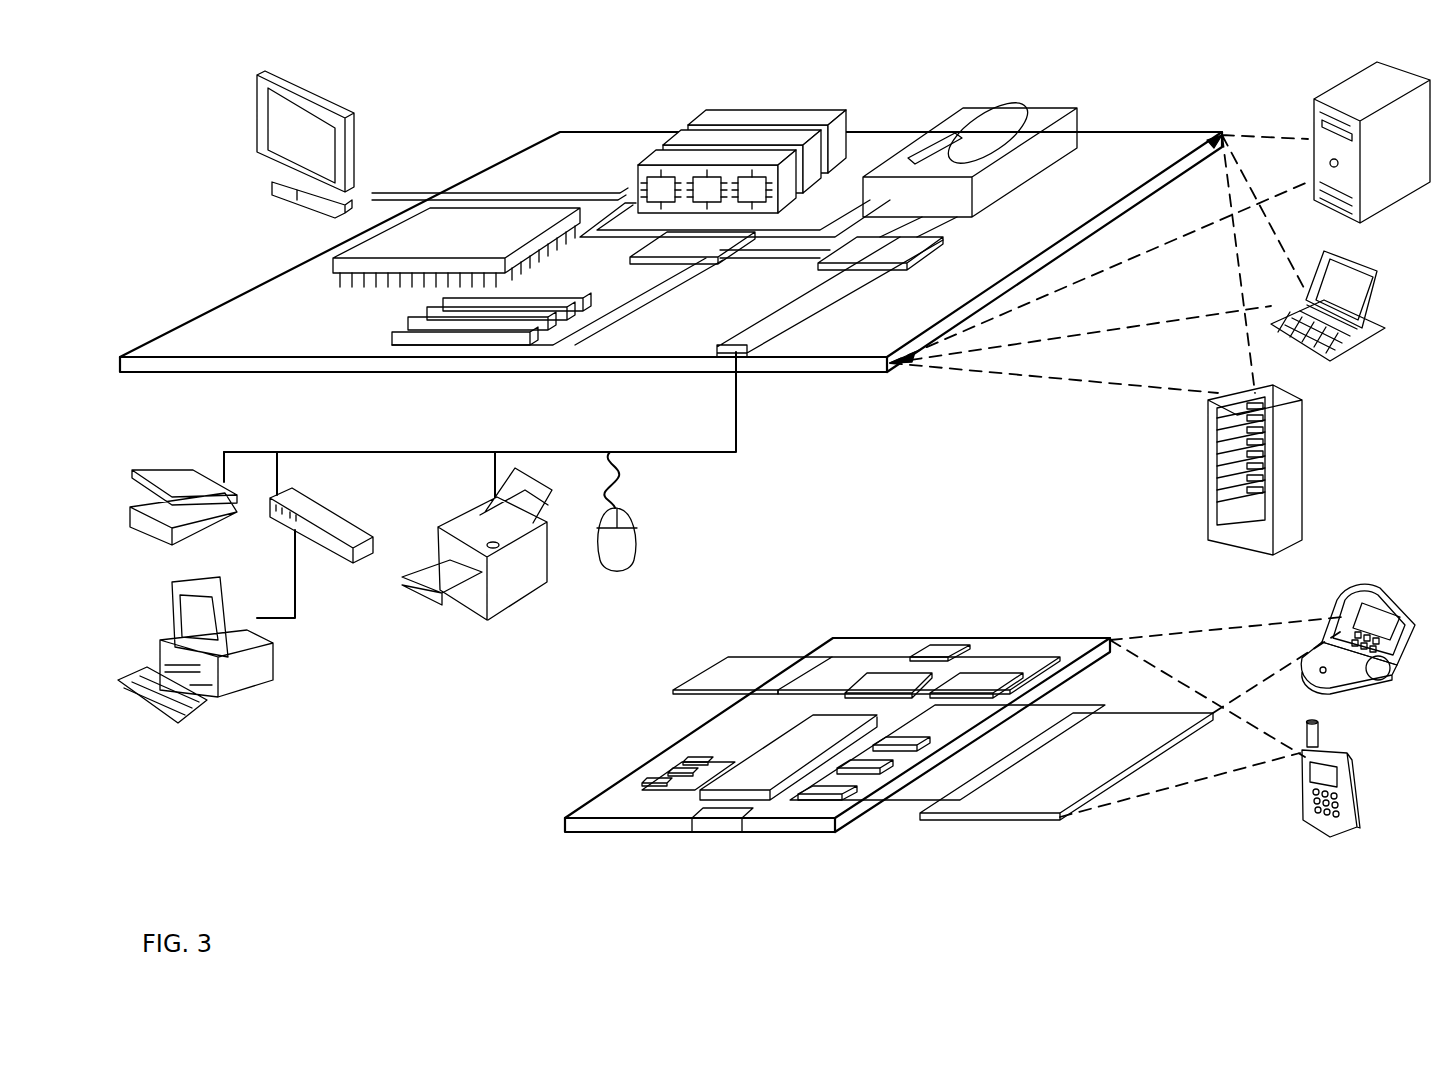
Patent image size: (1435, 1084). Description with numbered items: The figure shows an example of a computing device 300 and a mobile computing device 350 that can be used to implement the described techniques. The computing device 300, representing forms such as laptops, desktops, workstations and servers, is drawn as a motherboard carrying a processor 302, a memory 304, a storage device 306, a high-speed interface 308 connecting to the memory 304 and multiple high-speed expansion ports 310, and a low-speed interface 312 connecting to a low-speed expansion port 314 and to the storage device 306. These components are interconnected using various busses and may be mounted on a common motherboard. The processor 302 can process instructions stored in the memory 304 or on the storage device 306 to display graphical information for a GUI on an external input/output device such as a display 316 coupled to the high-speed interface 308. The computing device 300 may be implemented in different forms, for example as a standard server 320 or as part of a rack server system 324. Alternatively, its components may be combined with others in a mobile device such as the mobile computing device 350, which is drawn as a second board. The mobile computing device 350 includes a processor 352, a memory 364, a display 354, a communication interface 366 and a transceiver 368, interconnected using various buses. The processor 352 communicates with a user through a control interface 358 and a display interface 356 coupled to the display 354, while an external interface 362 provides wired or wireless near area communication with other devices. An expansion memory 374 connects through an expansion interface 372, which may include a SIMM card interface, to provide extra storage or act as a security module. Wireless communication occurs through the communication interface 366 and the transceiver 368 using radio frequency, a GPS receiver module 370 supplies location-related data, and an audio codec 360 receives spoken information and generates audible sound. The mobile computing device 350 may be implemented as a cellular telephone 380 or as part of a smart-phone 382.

The computing device 300 is at (478, 102).
The processor 302 is at (333, 264).
The memory 304 is at (712, 128).
The storage device 306 is at (960, 118).
The high-speed interface 308 is at (668, 246).
The high-speed expansion ports 310 is at (410, 324).
The low-speed interface 312 is at (857, 248).
The low-speed expansion port 314 is at (748, 362).
The display 316 is at (262, 77).
The standard server 320 is at (1312, 124).
The rack server system 324 is at (1210, 502).
The mobile computing device 350 is at (543, 826).
The processor 352 is at (759, 782).
The display 354 is at (1022, 803).
The display interface 356 is at (833, 795).
The control interface 358 is at (888, 762).
The audio codec 360 is at (898, 746).
The external interface 362 is at (720, 818).
The memory 364 is at (673, 772).
The communication interface 366 is at (893, 676).
The transceiver 368 is at (977, 682).
The GPS receiver module 370 is at (945, 645).
The expansion interface 372 is at (813, 652).
The expansion memory 374 is at (733, 658).
The cellular telephone 380 is at (1370, 596).
The smart-phone 382 is at (1300, 790).